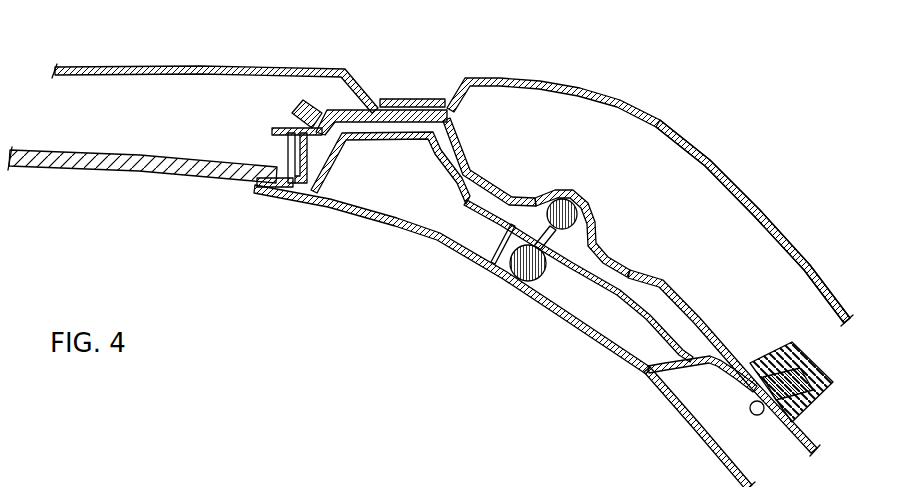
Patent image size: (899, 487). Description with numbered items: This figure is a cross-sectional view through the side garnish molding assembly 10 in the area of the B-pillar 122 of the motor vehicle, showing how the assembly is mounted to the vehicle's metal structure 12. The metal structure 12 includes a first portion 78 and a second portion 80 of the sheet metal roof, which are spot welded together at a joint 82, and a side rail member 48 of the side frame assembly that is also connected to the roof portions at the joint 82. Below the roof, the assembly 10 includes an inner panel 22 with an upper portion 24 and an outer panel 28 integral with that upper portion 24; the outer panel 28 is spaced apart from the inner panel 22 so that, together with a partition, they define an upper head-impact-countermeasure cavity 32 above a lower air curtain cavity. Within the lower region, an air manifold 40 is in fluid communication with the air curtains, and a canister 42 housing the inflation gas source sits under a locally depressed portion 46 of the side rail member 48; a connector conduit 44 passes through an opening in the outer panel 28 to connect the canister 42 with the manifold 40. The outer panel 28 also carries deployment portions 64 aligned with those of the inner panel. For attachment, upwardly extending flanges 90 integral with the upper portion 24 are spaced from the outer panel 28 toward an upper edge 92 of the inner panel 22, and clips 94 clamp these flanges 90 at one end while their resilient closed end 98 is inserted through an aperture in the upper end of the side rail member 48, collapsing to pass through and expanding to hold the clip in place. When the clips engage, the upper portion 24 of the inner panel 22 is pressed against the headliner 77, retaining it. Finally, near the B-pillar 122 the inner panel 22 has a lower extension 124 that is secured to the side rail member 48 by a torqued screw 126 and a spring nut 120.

The side garnish molding assembly 10 is at (327, 285).
The metal structure 12 is at (672, 118).
The inner panel 22 is at (430, 244).
The upper portion 24 is at (281, 192).
The outer panel 28 is at (438, 152).
The head-impact-countermeasure cavity 32 is at (367, 178).
The air manifold 40 is at (510, 272).
The canister 42 is at (585, 218).
The connector conduit 44 is at (515, 203).
The locally depressed portion 46 is at (585, 210).
The side rail member 48 is at (470, 150).
The deployment portions 64 is at (600, 237).
The headliner 77 is at (128, 150).
The first portion of sheet metal roof 78 is at (172, 66).
The second portion of sheet metal roof 80 is at (577, 80).
The joint 82 is at (447, 94).
The flanges 90 is at (288, 155).
The upper edge 92 is at (258, 182).
The clips 94 is at (318, 112).
The closed end 98 is at (292, 108).
The spring nut 120 is at (780, 345).
The B-pillar 122 is at (712, 440).
The lower extension 124 is at (733, 378).
The screw 126 is at (757, 416).